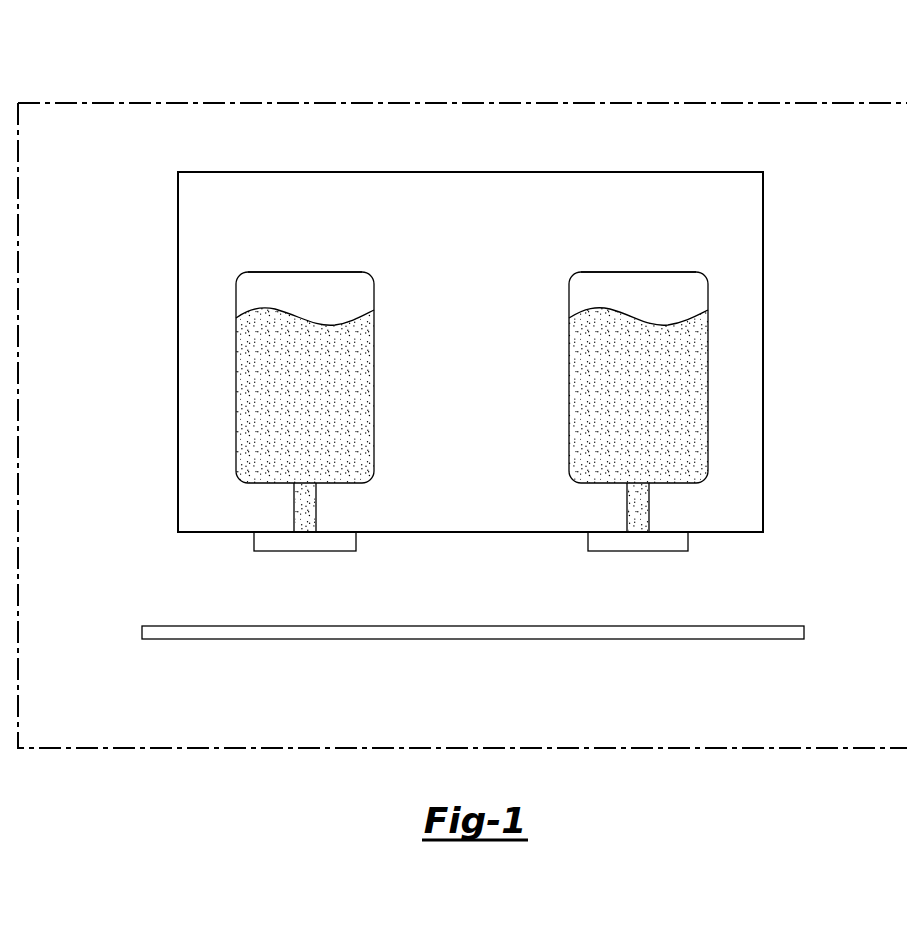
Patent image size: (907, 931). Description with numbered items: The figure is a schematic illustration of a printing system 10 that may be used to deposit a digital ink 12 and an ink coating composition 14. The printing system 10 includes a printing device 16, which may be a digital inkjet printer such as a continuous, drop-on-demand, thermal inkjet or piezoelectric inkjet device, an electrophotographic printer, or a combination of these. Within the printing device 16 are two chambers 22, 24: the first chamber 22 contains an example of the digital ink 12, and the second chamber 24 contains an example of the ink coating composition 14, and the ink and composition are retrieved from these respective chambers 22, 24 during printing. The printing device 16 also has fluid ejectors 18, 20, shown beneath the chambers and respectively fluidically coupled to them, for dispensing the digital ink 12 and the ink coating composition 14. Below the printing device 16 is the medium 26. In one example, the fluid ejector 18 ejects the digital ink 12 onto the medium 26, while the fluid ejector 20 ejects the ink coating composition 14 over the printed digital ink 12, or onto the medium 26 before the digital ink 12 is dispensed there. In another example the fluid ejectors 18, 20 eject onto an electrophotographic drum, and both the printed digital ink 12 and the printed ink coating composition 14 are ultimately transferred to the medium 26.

The printing system 10 is at (230, 103).
The digital ink 12 is at (292, 404).
The ink coating composition 14 is at (626, 404).
The printing device 16 is at (178, 358).
The fluid ejector 18 is at (302, 553).
The fluid ejector 20 is at (636, 553).
The chamber 22 is at (304, 272).
The chamber 24 is at (637, 272).
The medium 26 is at (805, 632).